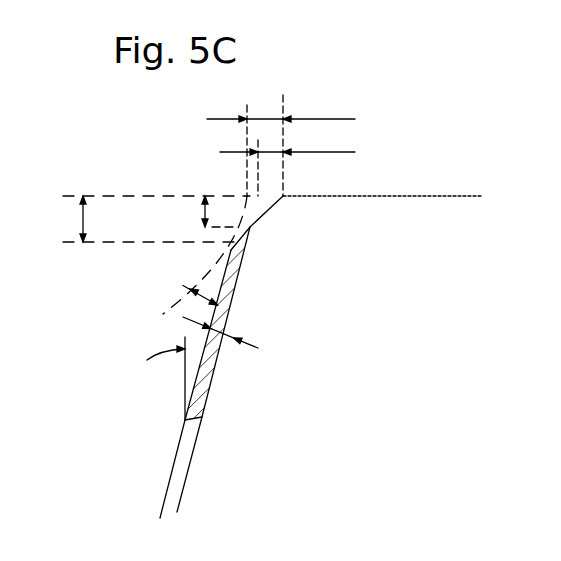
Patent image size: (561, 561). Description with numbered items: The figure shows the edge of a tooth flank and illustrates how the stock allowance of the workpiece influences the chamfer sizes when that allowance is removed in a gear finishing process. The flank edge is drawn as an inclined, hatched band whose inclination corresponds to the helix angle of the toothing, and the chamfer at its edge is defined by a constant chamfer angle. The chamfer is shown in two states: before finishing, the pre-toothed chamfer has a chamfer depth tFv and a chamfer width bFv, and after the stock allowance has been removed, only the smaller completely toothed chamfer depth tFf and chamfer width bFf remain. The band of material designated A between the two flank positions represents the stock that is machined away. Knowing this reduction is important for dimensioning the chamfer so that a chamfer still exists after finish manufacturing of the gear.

The chamfer depth in the pre-toothed state tFv is at (281, 145).
The chamfer depth in the completely toothed state tFf is at (287, 162).
The chamfer width in the pre-toothed state bFv is at (63, 219).
The chamfer width in the completely toothed state bFf is at (187, 213).
The fiber side surface A is at (218, 304).